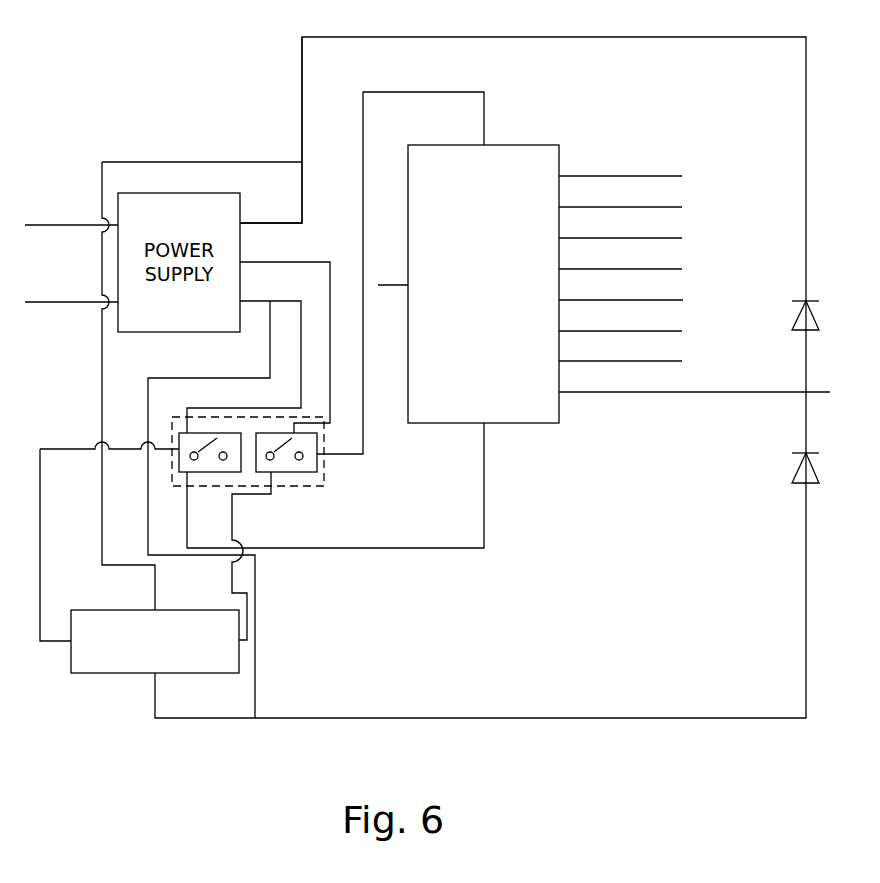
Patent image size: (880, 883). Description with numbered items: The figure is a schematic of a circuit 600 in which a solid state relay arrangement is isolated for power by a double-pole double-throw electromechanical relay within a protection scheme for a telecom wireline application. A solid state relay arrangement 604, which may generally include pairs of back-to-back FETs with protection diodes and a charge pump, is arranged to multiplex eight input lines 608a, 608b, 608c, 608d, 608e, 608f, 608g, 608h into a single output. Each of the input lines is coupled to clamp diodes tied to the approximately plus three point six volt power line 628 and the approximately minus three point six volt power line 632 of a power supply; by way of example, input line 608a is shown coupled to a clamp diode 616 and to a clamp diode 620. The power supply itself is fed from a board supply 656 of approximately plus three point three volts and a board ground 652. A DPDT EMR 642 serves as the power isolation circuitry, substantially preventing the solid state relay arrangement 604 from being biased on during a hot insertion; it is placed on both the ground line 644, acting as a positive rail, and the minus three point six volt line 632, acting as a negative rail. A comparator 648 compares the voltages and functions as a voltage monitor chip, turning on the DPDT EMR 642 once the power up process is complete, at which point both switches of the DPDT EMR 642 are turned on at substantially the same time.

The circuit 600 is at (155, 76).
The solid state relay arrangement 604 is at (556, 145).
The input line 608a is at (663, 393).
The input line 608b is at (682, 361).
The input line 608c is at (682, 331).
The input line 608d is at (683, 300).
The input line 608e is at (682, 269).
The input line 608f is at (682, 238).
The input line 608g is at (682, 207).
The input line 608h is at (682, 176).
The clamp diode 616 is at (791, 323).
The clamp diode 620 is at (792, 473).
The +3.6 Volt power line 628 is at (303, 190).
The -3.6 Volt power line 632 is at (318, 283).
The DPDT EMR 642 is at (314, 488).
The ground line 644 is at (329, 262).
The comparator 648 is at (203, 674).
The board ground 652 is at (36, 304).
The board supply 656 is at (36, 227).